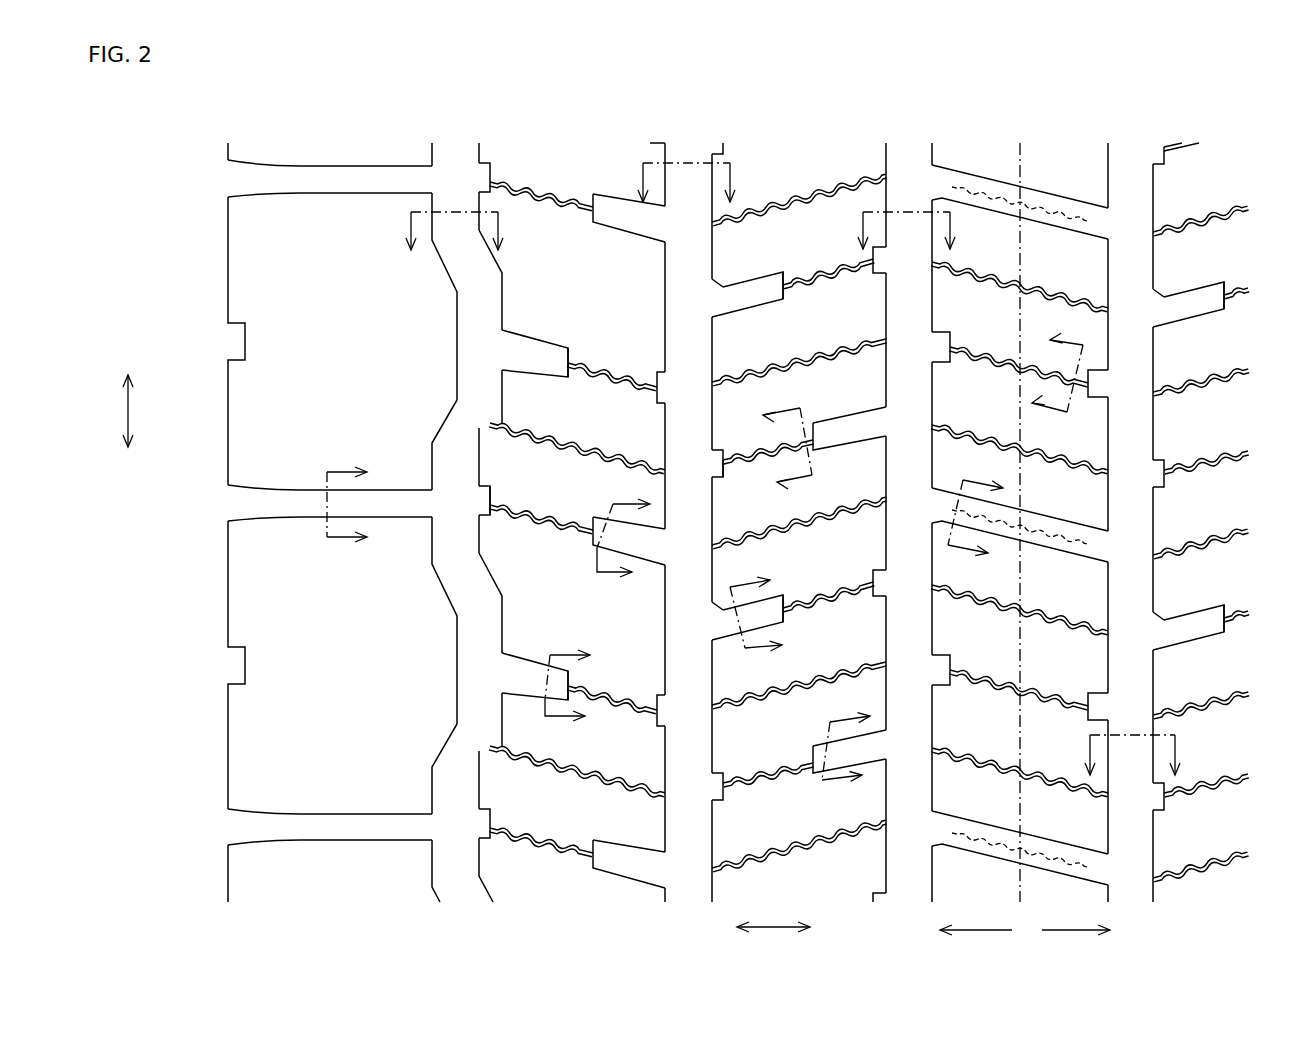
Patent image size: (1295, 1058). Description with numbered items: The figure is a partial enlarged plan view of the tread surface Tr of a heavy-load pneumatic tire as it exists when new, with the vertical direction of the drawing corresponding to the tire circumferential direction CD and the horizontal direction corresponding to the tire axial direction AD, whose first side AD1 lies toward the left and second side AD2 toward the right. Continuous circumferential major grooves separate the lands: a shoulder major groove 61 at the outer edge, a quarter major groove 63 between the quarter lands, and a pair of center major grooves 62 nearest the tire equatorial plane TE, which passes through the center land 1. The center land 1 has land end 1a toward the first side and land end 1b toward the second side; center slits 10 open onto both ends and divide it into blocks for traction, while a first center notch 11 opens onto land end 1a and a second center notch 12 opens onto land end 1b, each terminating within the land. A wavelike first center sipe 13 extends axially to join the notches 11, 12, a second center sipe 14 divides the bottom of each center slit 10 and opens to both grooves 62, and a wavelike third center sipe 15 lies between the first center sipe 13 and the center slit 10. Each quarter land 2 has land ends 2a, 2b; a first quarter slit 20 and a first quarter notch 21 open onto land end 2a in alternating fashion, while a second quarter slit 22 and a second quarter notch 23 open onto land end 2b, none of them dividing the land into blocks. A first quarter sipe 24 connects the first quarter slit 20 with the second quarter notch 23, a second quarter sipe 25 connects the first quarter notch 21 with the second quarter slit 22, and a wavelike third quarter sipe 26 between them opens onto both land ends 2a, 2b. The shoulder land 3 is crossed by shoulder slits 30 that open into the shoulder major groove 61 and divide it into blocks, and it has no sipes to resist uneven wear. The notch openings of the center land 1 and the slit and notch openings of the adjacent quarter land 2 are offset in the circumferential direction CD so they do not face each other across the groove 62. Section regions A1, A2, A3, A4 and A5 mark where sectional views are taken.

The center land 1 is at (1020, 498).
The land end 1a is at (932, 288).
The land end 1b is at (1108, 278).
The quarter land 2 is at (581, 137).
The land end 2a is at (502, 623).
The land end 2b is at (887, 478).
The shoulder land 3 is at (334, 148).
The center slit 10 is at (1098, 214).
The first center notch 11 is at (933, 332).
The second center notch 12 is at (1107, 377).
The first center sipe 13 is at (981, 352).
The second center sipe 14 is at (1065, 219).
The third center sipe 15 is at (978, 426).
The first quarter slit 20 is at (502, 333).
The first quarter notch 21 is at (479, 487).
The second quarter slit 22 is at (660, 215).
The second quarter notch 23 is at (662, 377).
The first quarter sipe 24 is at (577, 362).
The second quarter sipe 25 is at (503, 515).
The third quarter sipe 26 is at (553, 444).
The shoulder slit 30 is at (233, 196).
The shoulder major groove 61 is at (458, 140).
The center major groove 62 is at (907, 140).
The quarter major groove 63 is at (693, 140).
The tire equatorial plane TE is at (1019, 490).
The tread surface Tr is at (150, 113).
The tire circumferential direction CD is at (109, 411).
The tire axial direction AD is at (773, 941).
The first side AD1 is at (976, 945).
The second side AD2 is at (1076, 945).
The region A1- A1 is at (348, 511).
The region A2- A2 is at (708, 645).
The region A3- A3 is at (976, 518).
The region A4- A4 is at (793, 466).
The region A5- A5 is at (920, 410).